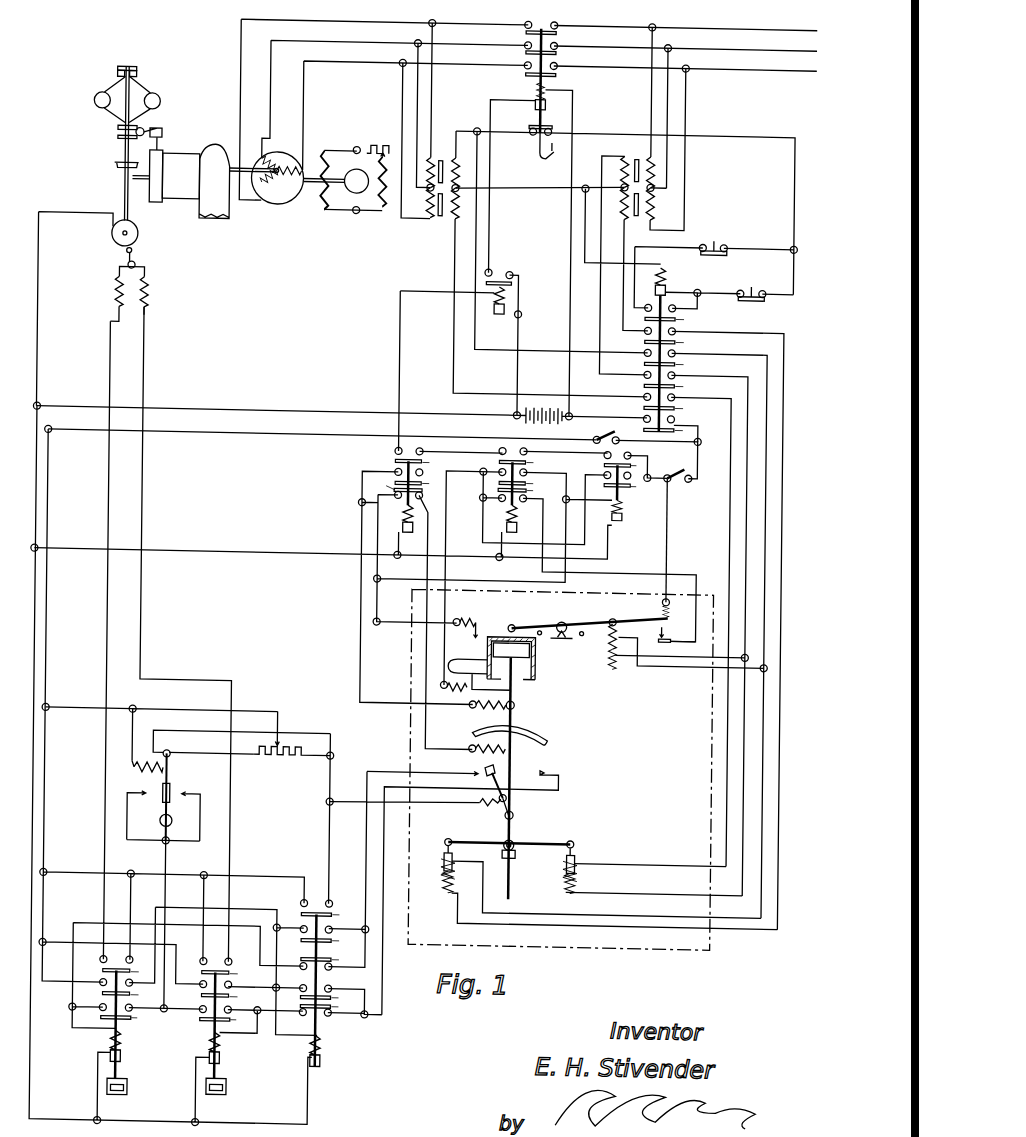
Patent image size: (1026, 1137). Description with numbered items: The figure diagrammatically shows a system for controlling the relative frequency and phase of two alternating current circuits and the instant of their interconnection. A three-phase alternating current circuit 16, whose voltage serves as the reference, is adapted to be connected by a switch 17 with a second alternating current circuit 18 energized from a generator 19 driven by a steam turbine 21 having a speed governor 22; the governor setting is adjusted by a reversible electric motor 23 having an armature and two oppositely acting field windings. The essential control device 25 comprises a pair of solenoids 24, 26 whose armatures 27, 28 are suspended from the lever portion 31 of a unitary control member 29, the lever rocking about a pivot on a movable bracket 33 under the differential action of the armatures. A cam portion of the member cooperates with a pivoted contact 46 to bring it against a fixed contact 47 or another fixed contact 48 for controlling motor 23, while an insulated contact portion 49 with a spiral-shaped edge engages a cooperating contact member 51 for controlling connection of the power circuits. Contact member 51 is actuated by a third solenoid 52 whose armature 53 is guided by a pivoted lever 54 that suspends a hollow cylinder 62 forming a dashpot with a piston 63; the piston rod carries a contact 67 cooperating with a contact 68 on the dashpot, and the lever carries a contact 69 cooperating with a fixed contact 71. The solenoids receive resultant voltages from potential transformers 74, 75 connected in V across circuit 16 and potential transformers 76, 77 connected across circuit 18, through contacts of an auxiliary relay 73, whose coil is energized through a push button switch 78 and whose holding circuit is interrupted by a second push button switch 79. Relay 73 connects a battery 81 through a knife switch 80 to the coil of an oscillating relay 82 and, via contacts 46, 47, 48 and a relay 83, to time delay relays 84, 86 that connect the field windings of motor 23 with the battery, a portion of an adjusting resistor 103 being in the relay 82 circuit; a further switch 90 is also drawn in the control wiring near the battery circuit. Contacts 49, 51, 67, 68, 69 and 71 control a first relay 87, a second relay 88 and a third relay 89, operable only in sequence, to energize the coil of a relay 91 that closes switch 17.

The alternating current circuit 16 is at (618, 62).
The switch 17 is at (539, 104).
The second alternating current circuit 18 is at (360, 44).
The generator 19 is at (286, 208).
The steam turbine 21 is at (178, 204).
The speed governor 22 is at (117, 152).
The reversible electric motor 23 is at (109, 238).
The solenoid 24 is at (446, 893).
The control device 25 is at (619, 944).
The solenoid 26 is at (570, 890).
The armature 27 is at (448, 858).
The armature 28 is at (579, 856).
The unitary control member 29 is at (517, 833).
The lever portion 31 is at (476, 840).
The movable bracket 33 is at (519, 854).
The pivoted contact 46 is at (488, 779).
The fixed contact 47 is at (476, 772).
The fixed contact 48 is at (472, 887).
The contact portion 49 is at (477, 726).
The contact member 51 is at (515, 706).
The third solenoid 52 is at (614, 661).
The armature 53 is at (608, 633).
The pivoted lever 54 is at (551, 621).
The hollow cylinder 62 is at (537, 647).
The piston 63 is at (525, 678).
The contact 67 is at (459, 665).
The contact 68 is at (461, 634).
The contact 69 is at (670, 614).
The fixed contact 71 is at (670, 638).
The auxiliary relay 73 is at (665, 271).
The potential transformer 74 is at (633, 153).
The potential transformer 75 is at (634, 221).
The potential transformer 76 is at (437, 155).
The potential transformer 77 is at (435, 218).
The push button switch 78 is at (750, 280).
The second push button switch 79 is at (711, 237).
The knife switch 80 is at (606, 431).
The battery 81 is at (519, 420).
The oscillating relay 82 is at (173, 773).
The relay 83 is at (326, 1062).
The time delay relay 84 is at (226, 1061).
The time delay relay 86 is at (127, 1061).
The first relay 87 is at (619, 525).
The second relay 88 is at (517, 529).
The third relay 89 is at (405, 532).
The switch 90 is at (678, 468).
The relay 91 is at (495, 311).
The adjusting resistor 103 is at (278, 758).